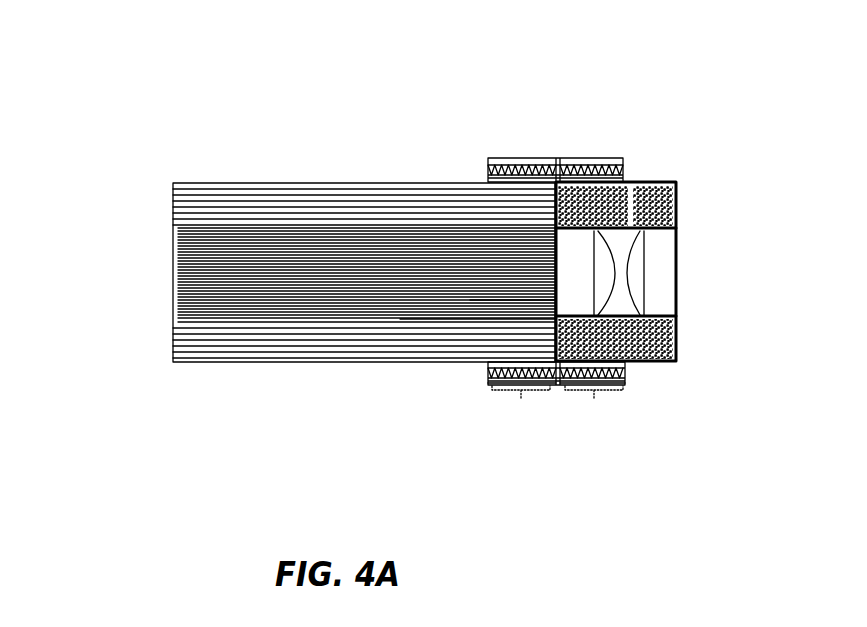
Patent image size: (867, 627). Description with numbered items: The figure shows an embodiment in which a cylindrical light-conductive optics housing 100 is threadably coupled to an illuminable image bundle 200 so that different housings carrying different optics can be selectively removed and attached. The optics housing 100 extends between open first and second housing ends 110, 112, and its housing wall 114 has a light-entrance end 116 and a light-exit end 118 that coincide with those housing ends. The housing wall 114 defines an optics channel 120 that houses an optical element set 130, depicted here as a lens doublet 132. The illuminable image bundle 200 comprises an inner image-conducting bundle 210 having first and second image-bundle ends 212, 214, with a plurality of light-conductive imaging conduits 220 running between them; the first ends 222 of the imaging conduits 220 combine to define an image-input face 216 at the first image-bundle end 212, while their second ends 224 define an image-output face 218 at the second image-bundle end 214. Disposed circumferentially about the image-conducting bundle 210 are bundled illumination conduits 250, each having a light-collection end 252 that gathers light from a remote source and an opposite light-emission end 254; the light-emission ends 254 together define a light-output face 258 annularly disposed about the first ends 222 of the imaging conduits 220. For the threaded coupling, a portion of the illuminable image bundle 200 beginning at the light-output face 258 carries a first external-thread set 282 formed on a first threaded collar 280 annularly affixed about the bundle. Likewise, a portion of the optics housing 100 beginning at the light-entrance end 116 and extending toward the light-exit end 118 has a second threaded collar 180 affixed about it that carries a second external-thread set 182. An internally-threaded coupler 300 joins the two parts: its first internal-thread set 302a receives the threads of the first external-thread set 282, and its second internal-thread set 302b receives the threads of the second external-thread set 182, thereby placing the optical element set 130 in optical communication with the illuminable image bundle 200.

The optics housing 100 is at (593, 192).
The first housing end 110 is at (556, 168).
The second housing end 112 is at (670, 182).
The housing wall 114 is at (645, 193).
The light-entrance end 116 is at (540, 162).
The light-exit end 118 is at (678, 203).
The optics channel 120 is at (629, 242).
The optical element set 130 is at (577, 267).
The lens doublet 132 is at (695, 247).
The second threaded collar 180 is at (628, 365).
The second external-thread set 182 is at (628, 378).
The illuminable image bundle 200 is at (403, 157).
The image-conducting bundle 210 is at (330, 298).
The first image-bundle end 212 is at (557, 300).
The second image-bundle end 214 is at (173, 293).
The image-input face 216 is at (430, 364).
The image-output face 218 is at (97, 352).
The imaging conduit 220 is at (356, 306).
The first end of imaging conduit 222 is at (553, 297).
The second end of imaging conduit 224 is at (173, 303).
The illumination conduit 250 is at (305, 184).
The light-collection end 252 is at (172, 188).
The light-emission end 254 is at (553, 220).
The light-output face 258 is at (553, 210).
The first threaded collar 280 is at (464, 365).
The first external-thread set 282 is at (488, 363).
The internally-threaded coupler 300 is at (630, 382).
The first internal-thread set 302a is at (526, 409).
The second internal-thread set 302b is at (601, 410).